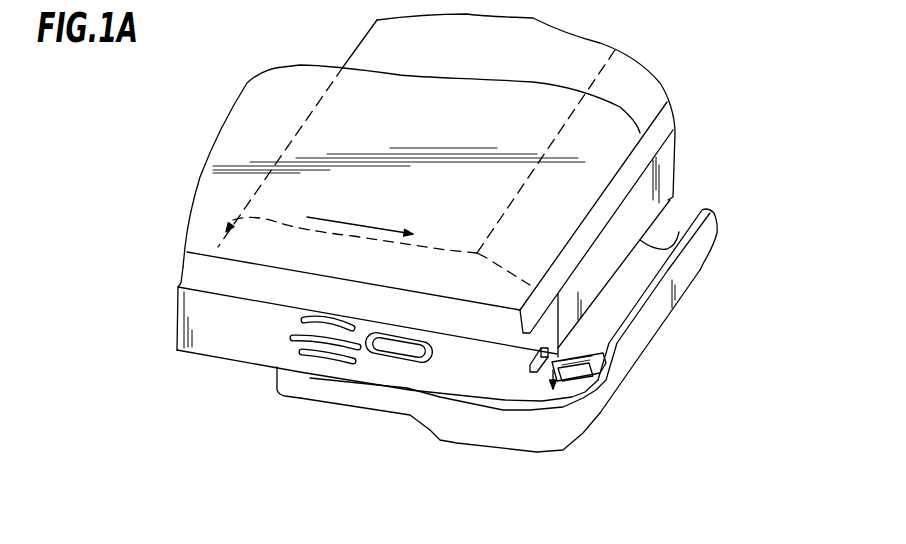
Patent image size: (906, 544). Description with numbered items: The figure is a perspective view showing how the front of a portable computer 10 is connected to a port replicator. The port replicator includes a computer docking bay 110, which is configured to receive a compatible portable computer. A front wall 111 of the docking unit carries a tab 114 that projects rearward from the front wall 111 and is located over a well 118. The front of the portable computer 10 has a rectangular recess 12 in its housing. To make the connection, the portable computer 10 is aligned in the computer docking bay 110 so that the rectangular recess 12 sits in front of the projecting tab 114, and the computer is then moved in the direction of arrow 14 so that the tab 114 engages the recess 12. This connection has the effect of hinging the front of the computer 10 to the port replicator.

The portable computer 10 is at (248, 360).
The rectangular recess 12 is at (536, 364).
The arrow 14 is at (342, 223).
The computer docking bay 110 is at (670, 223).
The front wall 111 is at (646, 320).
The left tab 114 is at (605, 353).
The well 118 is at (565, 372).